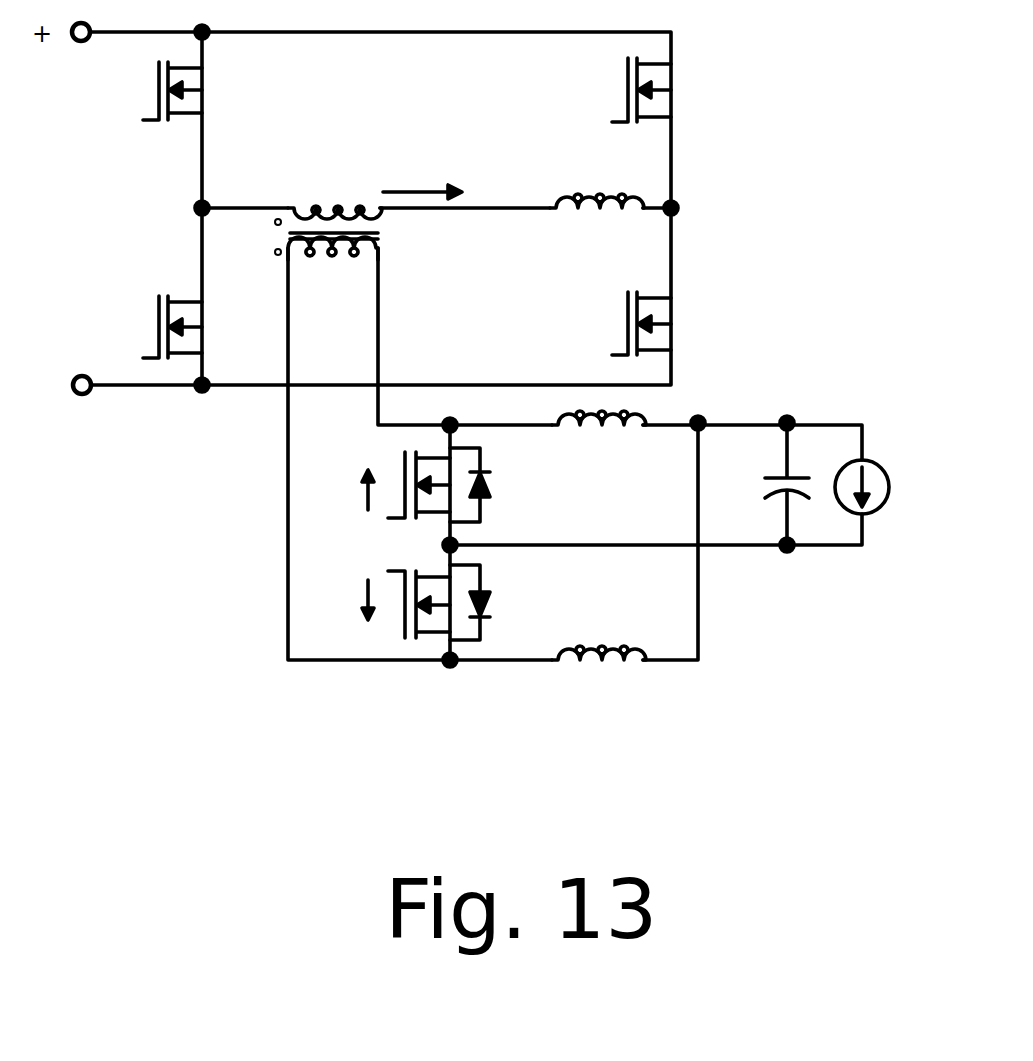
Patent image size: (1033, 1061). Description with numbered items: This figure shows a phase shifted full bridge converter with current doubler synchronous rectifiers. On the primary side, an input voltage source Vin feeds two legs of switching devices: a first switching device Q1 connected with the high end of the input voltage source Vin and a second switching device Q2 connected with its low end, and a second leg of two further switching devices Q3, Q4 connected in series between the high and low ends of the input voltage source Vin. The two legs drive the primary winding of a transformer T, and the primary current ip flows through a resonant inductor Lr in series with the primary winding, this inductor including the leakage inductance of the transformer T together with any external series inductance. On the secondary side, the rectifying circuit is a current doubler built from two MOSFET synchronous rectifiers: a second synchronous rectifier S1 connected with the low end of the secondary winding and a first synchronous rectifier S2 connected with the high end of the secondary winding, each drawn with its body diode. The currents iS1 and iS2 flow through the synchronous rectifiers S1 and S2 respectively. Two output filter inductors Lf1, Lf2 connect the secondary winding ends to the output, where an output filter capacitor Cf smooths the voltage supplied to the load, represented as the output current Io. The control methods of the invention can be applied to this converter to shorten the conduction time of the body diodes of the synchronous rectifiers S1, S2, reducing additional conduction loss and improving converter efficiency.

The input voltage source Vin is at (75, 216).
The first switching device Q1 is at (154, 92).
The second switching device Q2 is at (154, 327).
The switching device Q3 is at (668, 90).
The switching device Q4 is at (668, 323).
The transformer T is at (348, 233).
The primary current ip is at (422, 174).
The resonant inductor Lr is at (597, 171).
The output filter inductor Lf1 is at (599, 447).
The output filter inductor Lf2 is at (599, 624).
The second synchronous rectifier S1 is at (455, 485).
The first synchronous rectifier S2 is at (455, 602).
The current through synchronous rectifier S1 iS1 is at (350, 490).
The current through synchronous rectifier S2 iS2 is at (350, 600).
The output filter capacitor Cf is at (778, 484).
The output current Io is at (873, 489).